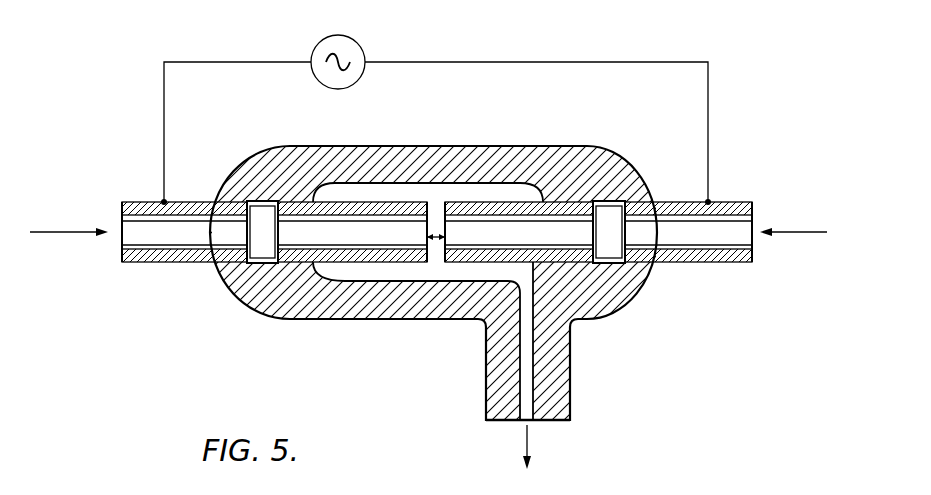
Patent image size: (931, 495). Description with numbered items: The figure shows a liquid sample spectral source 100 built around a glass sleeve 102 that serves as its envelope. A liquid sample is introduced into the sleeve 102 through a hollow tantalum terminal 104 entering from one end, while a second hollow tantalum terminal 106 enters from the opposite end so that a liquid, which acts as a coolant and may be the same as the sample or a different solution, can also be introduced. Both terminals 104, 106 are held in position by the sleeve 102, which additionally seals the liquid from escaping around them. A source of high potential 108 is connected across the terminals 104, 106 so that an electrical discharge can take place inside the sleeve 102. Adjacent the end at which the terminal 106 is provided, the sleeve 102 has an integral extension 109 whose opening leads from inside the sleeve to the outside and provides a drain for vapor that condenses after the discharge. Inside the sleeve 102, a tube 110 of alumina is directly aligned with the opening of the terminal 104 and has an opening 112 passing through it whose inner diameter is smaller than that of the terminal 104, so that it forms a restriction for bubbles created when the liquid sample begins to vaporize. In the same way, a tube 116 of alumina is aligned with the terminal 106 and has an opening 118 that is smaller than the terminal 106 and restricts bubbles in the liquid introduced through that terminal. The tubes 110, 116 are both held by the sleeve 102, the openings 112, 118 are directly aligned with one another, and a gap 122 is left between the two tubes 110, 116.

The liquid sample spectral source 100 is at (769, 361).
The glass sleeve 102 is at (647, 283).
The hollow tantalum terminal 104 is at (134, 265).
The second hollow tantalum terminal 106 is at (727, 203).
The source of high potential 108 is at (359, 42).
The integral extension 109 is at (566, 393).
The tube 110 is at (372, 258).
The opening 112 is at (280, 242).
The tube 116 is at (546, 186).
The opening 118 is at (580, 232).
The gap 122 is at (437, 234).